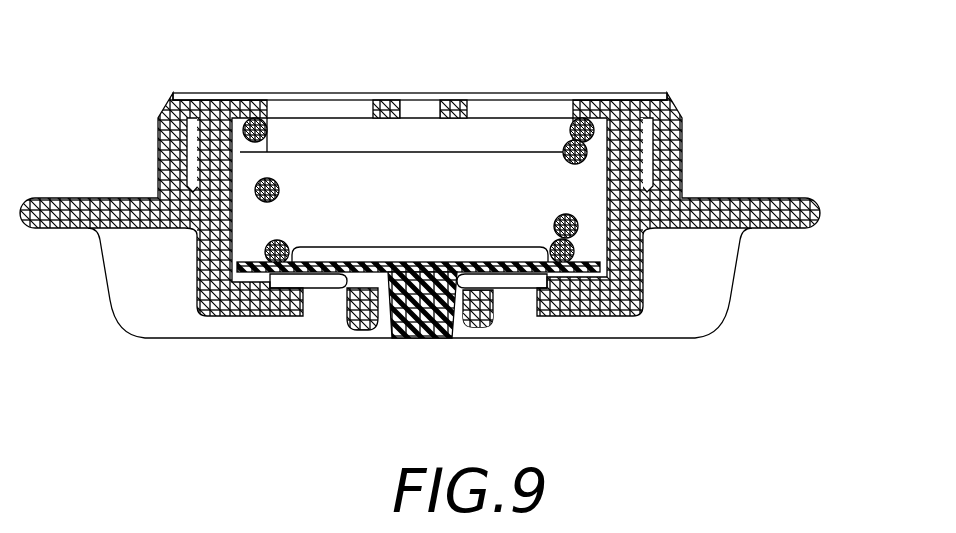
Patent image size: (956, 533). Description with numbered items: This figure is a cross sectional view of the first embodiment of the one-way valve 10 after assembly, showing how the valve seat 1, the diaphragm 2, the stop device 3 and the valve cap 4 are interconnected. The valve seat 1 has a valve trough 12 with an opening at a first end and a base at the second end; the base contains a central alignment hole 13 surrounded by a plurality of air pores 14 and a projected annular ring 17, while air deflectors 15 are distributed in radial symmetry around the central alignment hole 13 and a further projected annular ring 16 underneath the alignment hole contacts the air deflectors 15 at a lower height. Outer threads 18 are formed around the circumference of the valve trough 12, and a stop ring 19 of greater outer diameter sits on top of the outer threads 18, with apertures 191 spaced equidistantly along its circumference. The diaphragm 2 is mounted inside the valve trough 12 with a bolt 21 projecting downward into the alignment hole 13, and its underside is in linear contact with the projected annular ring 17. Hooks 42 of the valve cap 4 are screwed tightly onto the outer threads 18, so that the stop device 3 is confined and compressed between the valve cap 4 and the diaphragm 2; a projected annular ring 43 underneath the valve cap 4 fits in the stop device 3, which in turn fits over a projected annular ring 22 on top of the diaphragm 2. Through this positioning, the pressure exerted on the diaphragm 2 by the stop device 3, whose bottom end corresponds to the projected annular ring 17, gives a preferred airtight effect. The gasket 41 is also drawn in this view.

The valve seat 1 is at (757, 210).
The diaphragm 2 is at (593, 288).
The stop device 3 is at (567, 148).
The valve cap 4 is at (637, 107).
The sensor device assembly 10 is at (757, 71).
The valve trough 12 is at (235, 178).
The central alignment hole 13 is at (460, 330).
The air pores 14 is at (517, 306).
The air deflectors 15 is at (635, 327).
The projected annular ring 16 is at (488, 330).
The projected annular ring 17 is at (251, 273).
The outer threads 18 is at (200, 152).
The stop ring 19 is at (200, 118).
The bolt 21 is at (417, 340).
The projected annular ring 22 is at (333, 250).
The sealing gasket 41 is at (553, 107).
The hooks 42 is at (681, 150).
The projected annular ring 43 is at (506, 133).
The apertures 191 is at (200, 130).